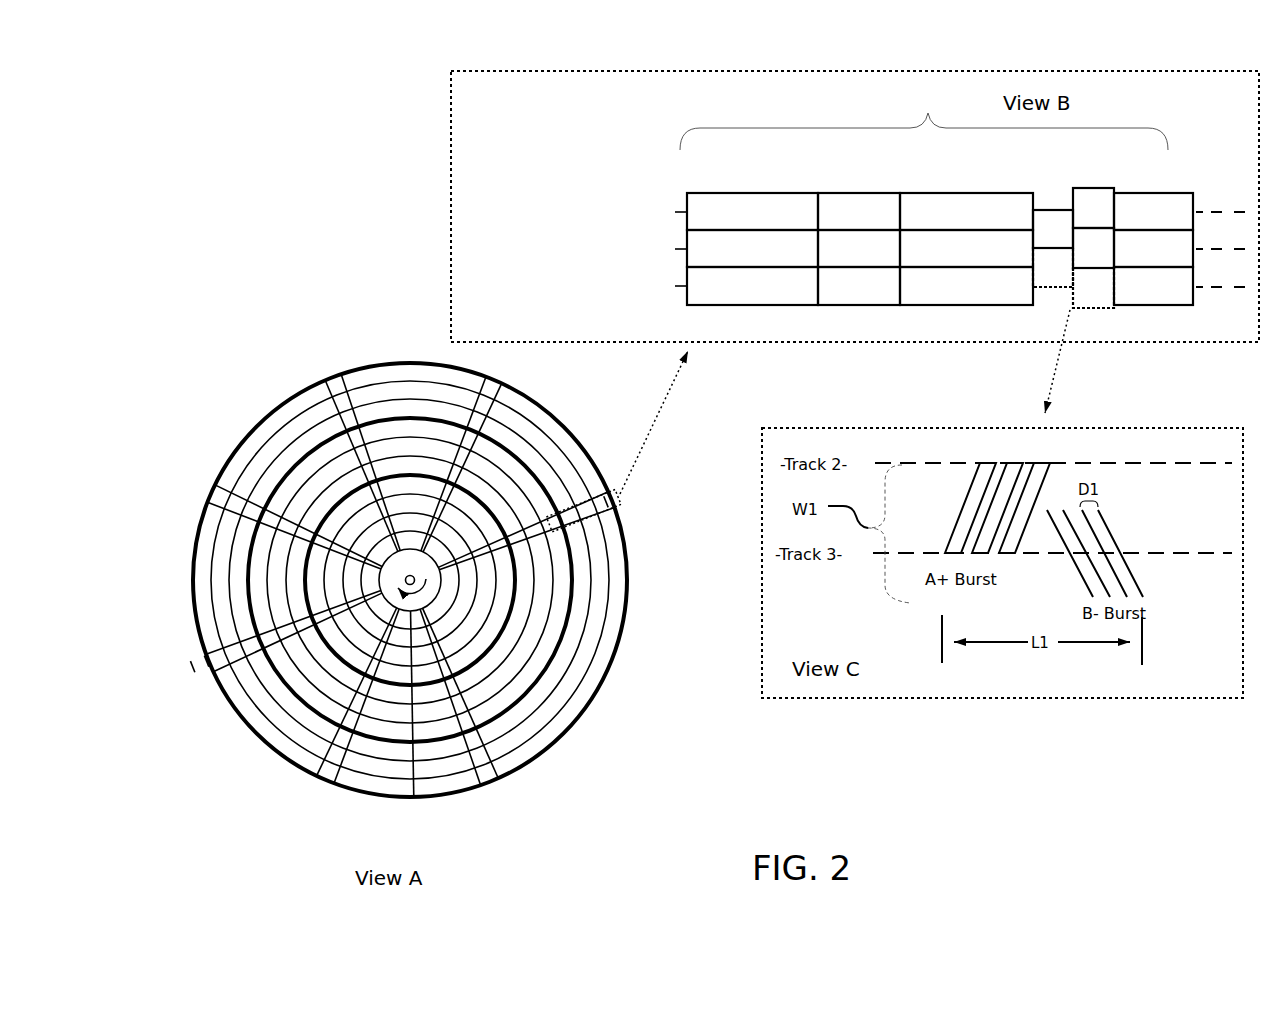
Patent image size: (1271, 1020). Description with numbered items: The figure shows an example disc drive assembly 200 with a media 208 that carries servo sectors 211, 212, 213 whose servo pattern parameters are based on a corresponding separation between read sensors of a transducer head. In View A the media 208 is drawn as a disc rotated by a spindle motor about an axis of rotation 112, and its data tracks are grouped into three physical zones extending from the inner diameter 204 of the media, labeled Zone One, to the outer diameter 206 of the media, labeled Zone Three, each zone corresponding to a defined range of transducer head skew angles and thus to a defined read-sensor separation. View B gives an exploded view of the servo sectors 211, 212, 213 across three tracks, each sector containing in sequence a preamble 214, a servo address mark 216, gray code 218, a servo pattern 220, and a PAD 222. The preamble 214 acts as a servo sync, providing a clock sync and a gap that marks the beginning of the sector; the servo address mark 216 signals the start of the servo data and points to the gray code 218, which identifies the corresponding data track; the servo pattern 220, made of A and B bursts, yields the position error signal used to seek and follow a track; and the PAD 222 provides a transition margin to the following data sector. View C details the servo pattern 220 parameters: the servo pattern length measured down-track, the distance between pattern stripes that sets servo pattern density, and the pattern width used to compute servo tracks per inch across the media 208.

The disc drive assembly 200 is at (290, 274).
The axis of rotation 112 is at (410, 580).
The inner diameter 204 is at (405, 797).
The outer diameter 206 is at (268, 748).
The media 208 is at (529, 784).
The servo sector 211 is at (548, 208).
The servo sector 212 is at (548, 246).
The servo sector 213 is at (548, 283).
The preamble 214 is at (715, 193).
The servo address mark (SAM) 216 is at (843, 193).
The gray code 218 is at (973, 193).
The servo pattern 220 is at (1089, 176).
The PAD 222 is at (1157, 193).